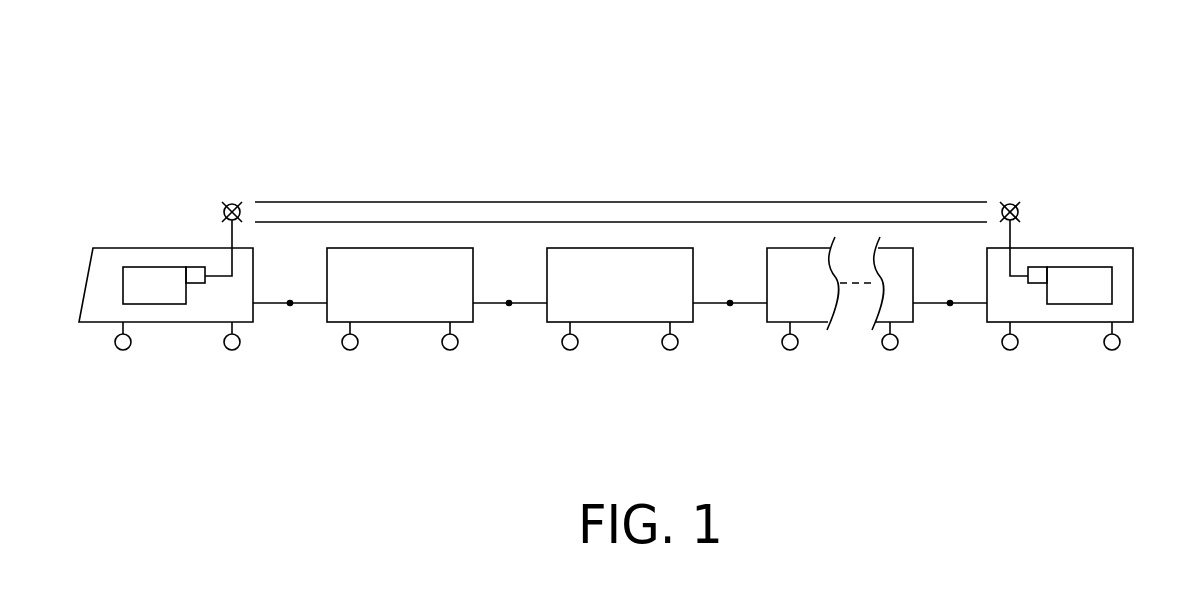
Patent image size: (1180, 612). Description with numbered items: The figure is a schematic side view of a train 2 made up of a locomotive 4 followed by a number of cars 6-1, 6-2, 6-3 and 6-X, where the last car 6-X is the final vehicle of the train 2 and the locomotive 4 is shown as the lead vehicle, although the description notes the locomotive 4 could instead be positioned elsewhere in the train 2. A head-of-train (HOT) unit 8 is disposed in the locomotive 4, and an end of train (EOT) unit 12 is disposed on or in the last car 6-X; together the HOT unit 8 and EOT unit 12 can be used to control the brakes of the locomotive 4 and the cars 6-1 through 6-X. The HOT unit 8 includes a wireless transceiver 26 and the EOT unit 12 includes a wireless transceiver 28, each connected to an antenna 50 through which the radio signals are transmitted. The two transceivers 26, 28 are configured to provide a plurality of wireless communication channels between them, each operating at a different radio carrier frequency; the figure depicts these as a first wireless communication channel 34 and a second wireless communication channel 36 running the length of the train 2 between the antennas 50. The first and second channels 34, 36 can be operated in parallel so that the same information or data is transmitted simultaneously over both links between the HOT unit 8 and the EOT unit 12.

The train 2 is at (652, 92).
The locomotive 4 is at (178, 248).
The head-of-train (HOT) unit 8 is at (137, 267).
The wireless transceiver 26 is at (198, 283).
The antenna 50 is at (230, 200).
The first wireless communication channel 34 is at (480, 200).
The second wireless communication channel 36 is at (707, 223).
The car 6-1 is at (400, 248).
The car 6-2 is at (615, 248).
The car 6-3 is at (820, 248).
The car 6-X is at (1058, 248).
The end of train (EOT) unit 12 is at (1080, 267).
The wireless transceiver 28 is at (1038, 283).